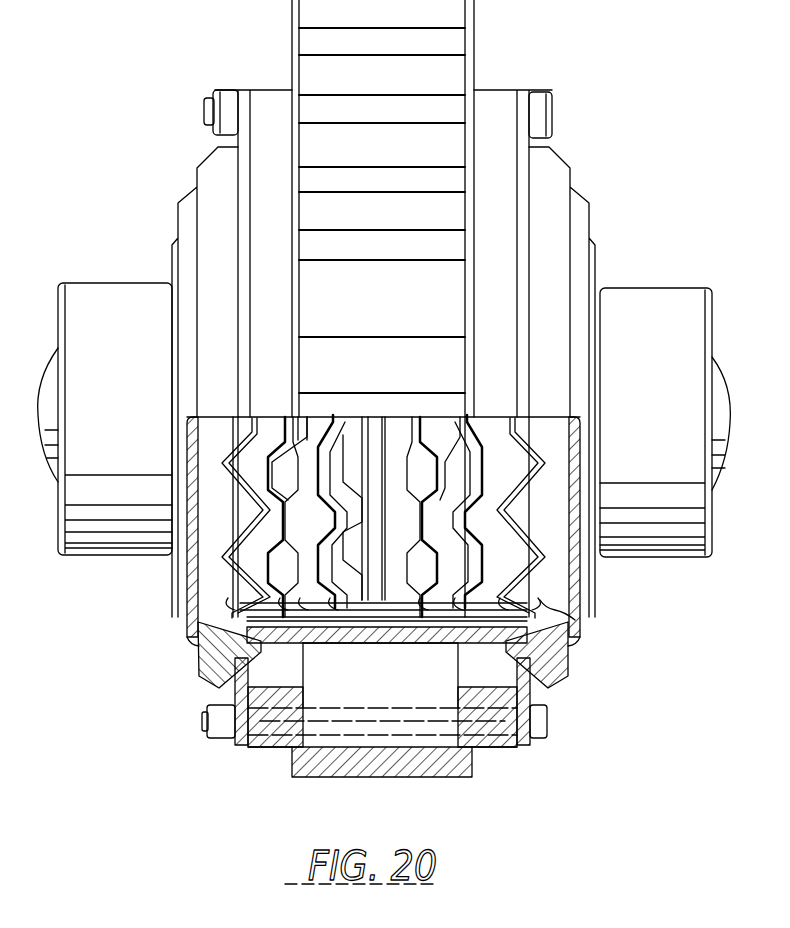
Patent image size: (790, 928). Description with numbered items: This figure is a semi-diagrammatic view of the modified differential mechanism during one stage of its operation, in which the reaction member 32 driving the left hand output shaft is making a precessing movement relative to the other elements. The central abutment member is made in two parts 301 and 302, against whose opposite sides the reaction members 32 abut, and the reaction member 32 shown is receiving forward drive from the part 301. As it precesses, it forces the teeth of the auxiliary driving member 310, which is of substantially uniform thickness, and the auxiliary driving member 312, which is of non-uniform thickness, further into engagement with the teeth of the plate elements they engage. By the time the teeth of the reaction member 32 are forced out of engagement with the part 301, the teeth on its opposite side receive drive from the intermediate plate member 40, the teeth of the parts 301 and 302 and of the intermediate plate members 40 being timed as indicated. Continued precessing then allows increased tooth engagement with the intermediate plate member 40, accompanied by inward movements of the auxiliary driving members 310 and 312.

The reaction member 32 is at (340, 440).
The intermediate plate member 40 is at (307, 440).
The part of abutment member 301 is at (383, 590).
The part of abutment member 302 is at (394, 585).
The auxiliary driving member 310 is at (197, 655).
The auxiliary driving member 312 is at (510, 578).